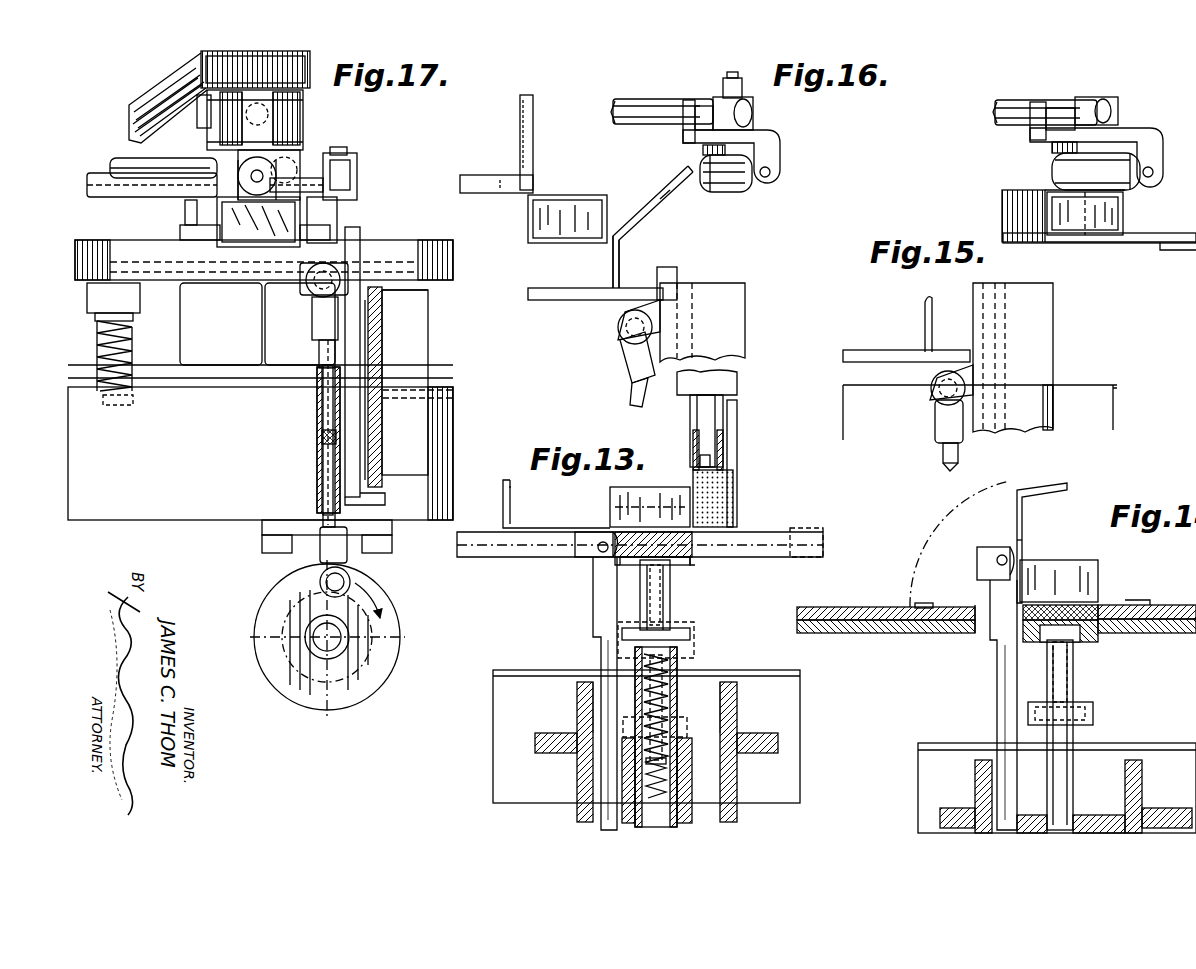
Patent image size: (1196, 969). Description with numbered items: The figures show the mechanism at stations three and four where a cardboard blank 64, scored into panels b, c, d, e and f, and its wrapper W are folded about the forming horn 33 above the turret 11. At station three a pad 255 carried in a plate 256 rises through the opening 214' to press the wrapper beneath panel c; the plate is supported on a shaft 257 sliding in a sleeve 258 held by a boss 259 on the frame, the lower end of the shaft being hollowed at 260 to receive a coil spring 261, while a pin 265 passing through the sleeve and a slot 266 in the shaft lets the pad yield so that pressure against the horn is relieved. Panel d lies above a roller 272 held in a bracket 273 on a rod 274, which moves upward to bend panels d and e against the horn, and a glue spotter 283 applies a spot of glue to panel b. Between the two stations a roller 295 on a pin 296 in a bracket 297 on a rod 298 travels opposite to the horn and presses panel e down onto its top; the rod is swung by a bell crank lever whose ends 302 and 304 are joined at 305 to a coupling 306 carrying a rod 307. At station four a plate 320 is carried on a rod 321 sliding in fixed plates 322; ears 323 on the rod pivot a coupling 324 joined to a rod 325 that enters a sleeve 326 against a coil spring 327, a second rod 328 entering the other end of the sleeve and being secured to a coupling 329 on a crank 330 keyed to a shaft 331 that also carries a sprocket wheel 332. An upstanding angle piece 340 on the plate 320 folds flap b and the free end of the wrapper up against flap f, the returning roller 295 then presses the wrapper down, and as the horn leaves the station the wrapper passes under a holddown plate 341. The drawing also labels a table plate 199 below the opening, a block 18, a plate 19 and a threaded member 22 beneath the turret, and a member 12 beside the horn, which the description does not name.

In FIG. 17, the turret 11 is at (88, 244).
In FIG. 14, the bed plate 12 is at (1098, 568).
In FIG. 17, the block 18 is at (141, 290).
In FIG. 17, the plate 19 is at (135, 312).
In FIG. 17, the spring 22 is at (98, 345).
In FIG. 16, the tape holder box 33 is at (555, 200).
In FIG. 15, the tape holder box 33 is at (1112, 203).
In FIG. 13, the tape holder box 33 is at (655, 497).
In FIG. 14, the tape holder box 33 is at (1085, 565).
In FIG. 15, the blank 64 is at (1088, 240).
In FIG. 13, the blank 64 is at (545, 530).
In FIG. 14, the blank 64 is at (1025, 538).
In FIG. 13, the table plate 199 is at (815, 531).
In FIG. 14, the table plate 199 is at (862, 607).
In FIG. 13, the opening 214' is at (515, 564).
In FIG. 14, the opening 214' is at (936, 629).
In FIG. 13, the pad 255 is at (700, 540).
In FIG. 14, the pad 255 is at (1078, 605).
In FIG. 13, the plate 256 is at (692, 552).
In FIG. 14, the plate 256 is at (1098, 638).
In FIG. 13, the shaft 257 is at (662, 592).
In FIG. 14, the shaft 257 is at (1075, 673).
In FIG. 13, the sleeve 258 is at (678, 656).
In FIG. 14, the sleeve 258 is at (1095, 725).
In FIG. 13, the boss 259 is at (675, 828).
In FIG. 13, the hollowed end 260 is at (672, 678).
In FIG. 13, the coil spring 261 is at (674, 715).
In FIG. 13, the pin 265 is at (690, 636).
In FIG. 13, the slot 266 is at (655, 605).
In FIG. 14, the slot 266 is at (1062, 652).
In FIG. 13, the roller 272 is at (607, 532).
In FIG. 14, the roller 272 is at (1003, 550).
In FIG. 13, the bracket 273 is at (583, 562).
In FIG. 14, the bracket 273 is at (977, 565).
In FIG. 13, the rod 274 is at (595, 620).
In FIG. 14, the rod 274 is at (990, 660).
In FIG. 13, the glue spotter 283 is at (712, 412).
In FIG. 17, the roller 295 is at (226, 212).
In FIG. 16, the roller 295 is at (748, 190).
In FIG. 15, the roller 295 is at (1096, 166).
In FIG. 16, the pin 296 is at (772, 170).
In FIG. 15, the pin 296 is at (1193, 152).
In FIG. 16, the bracket 297 is at (770, 133).
In FIG. 15, the bracket 297 is at (1160, 135).
In FIG. 17, the rod 298 is at (285, 118).
In FIG. 16, the rod 298 is at (672, 88).
In FIG. 15, the rod 298 is at (1010, 101).
In FIG. 17, the bell crank lever end 302 is at (283, 150).
In FIG. 17, the bell crank lever end 304 is at (356, 187).
In FIG. 17, the connection 305 is at (346, 153).
In FIG. 17, the coupling 306 is at (352, 160).
In FIG. 17, the rod 307 is at (312, 152).
In FIG. 17, the plate 320 is at (236, 250).
In FIG. 16, the plate 320 is at (538, 298).
In FIG. 15, the plate 320 is at (868, 350).
In FIG. 17, the rod 321 is at (362, 325).
In FIG. 16, the rod 321 is at (672, 268).
In FIG. 17, the fixed plates 322 is at (362, 436).
In FIG. 16, the fixed plates 322 is at (716, 286).
In FIG. 15, the fixed plates 322 is at (1050, 340).
In FIG. 17, the ears 323 is at (313, 300).
In FIG. 16, the ears 323 is at (617, 332).
In FIG. 17, the coupling 324 is at (318, 324).
In FIG. 16, the coupling 324 is at (620, 365).
In FIG. 15, the coupling 324 is at (945, 417).
In FIG. 17, the rod 325 is at (318, 352).
In FIG. 15, the rod 325 is at (947, 460).
In FIG. 17, the sleeve 326 is at (318, 418).
In FIG. 17, the coil spring 327 is at (320, 442).
In FIG. 17, the rod 328 is at (325, 517).
In FIG. 17, the coupling 329 is at (320, 547).
In FIG. 17, the crank 330 is at (372, 582).
In FIG. 17, the shaft 331 is at (325, 640).
In FIG. 17, the sprocket wheel 332 is at (385, 665).
In FIG. 17, the angle piece 340 is at (312, 232).
In FIG. 16, the angle piece 340 is at (612, 272).
In FIG. 15, the angle piece 340 is at (925, 318).
In FIG. 17, the holddown plate 341 is at (100, 172).
In FIG. 16, the holddown plate 341 is at (476, 193).
In FIG. 16, the panel b is at (640, 215).
In FIG. 15, the panel b is at (1099, 233).
In FIG. 14, the panel b is at (1150, 610).
In FIG. 15, the panel c is at (1070, 236).
In FIG. 14, the panel c is at (1042, 577).
In FIG. 15, the panel d is at (955, 217).
In FIG. 13, the panel d is at (580, 527).
In FIG. 14, the panel d is at (1032, 570).
In FIG. 15, the panel e is at (1060, 195).
In FIG. 14, the panel e is at (1022, 530).
In FIG. 16, the panel f is at (614, 205).
In FIG. 15, the panel f is at (1160, 230).
In FIG. 13, the panel f is at (512, 492).
In FIG. 14, the panel f is at (1058, 490).
In FIG. 16, the work piece W is at (533, 248).
In FIG. 15, the work piece W is at (1160, 250).